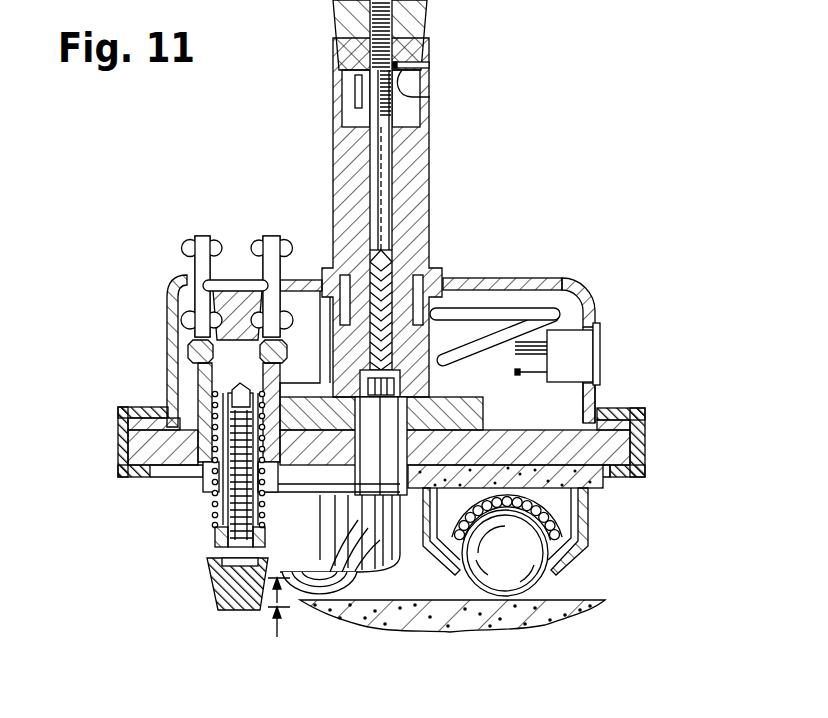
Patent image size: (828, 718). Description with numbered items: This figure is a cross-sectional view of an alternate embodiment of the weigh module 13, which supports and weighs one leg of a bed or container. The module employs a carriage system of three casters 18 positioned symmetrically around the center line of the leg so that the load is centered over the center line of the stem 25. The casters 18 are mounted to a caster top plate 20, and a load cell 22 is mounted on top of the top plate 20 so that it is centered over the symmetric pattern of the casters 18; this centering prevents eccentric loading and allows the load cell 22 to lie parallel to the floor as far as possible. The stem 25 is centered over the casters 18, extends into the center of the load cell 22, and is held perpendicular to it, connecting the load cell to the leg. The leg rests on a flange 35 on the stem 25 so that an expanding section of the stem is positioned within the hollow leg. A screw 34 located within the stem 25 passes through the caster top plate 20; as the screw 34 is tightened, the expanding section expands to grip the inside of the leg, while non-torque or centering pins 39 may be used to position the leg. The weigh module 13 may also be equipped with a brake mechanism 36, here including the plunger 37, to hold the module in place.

The weigh module 13 is at (647, 433).
The casters 18 is at (347, 594).
The caster top plate 20 is at (645, 443).
The load cell 22 is at (483, 403).
The stem 25 is at (430, 143).
The screw 34 is at (400, 205).
The flange 35 is at (433, 268).
The brake mechanism 36 is at (189, 268).
The plunger 37 is at (213, 584).
The centering pins 39 is at (430, 97).